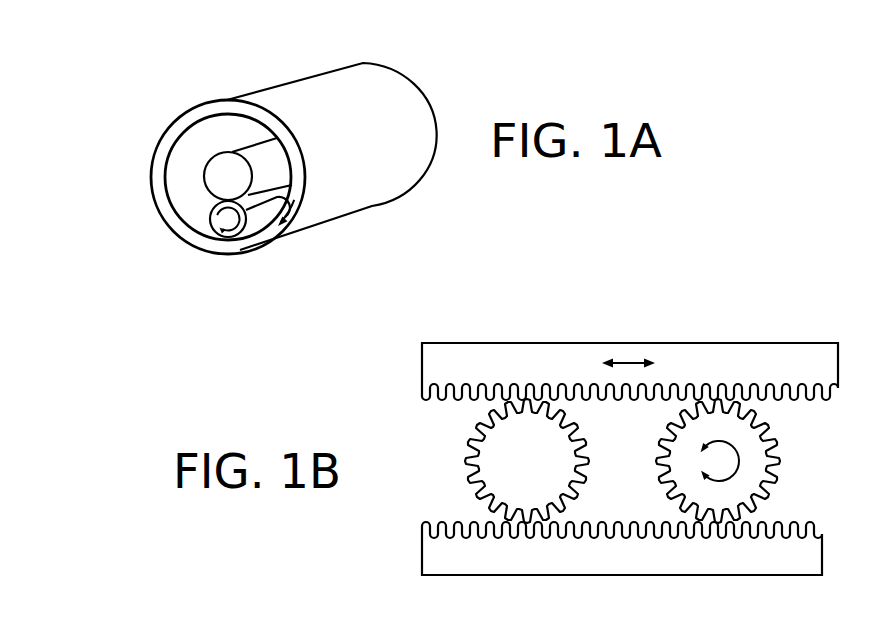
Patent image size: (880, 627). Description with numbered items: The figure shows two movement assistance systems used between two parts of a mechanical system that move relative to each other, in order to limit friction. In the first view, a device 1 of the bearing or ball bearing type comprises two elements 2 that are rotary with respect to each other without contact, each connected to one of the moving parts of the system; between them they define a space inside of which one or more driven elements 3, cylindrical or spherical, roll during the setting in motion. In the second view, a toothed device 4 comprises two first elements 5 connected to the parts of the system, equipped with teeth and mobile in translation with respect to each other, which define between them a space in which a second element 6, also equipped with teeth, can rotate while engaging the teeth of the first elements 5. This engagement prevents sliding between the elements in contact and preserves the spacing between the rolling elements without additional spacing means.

In FIG. 1A, the device 1 is at (192, 89).
In FIG. 1A, the elements 2 is at (213, 171).
In FIG. 1A, the driven elements 3 is at (255, 220).
In FIG. 1B, the device 4 is at (621, 428).
In FIG. 1B, the first elements 5 is at (773, 360).
In FIG. 1B, the second element 6 is at (480, 446).